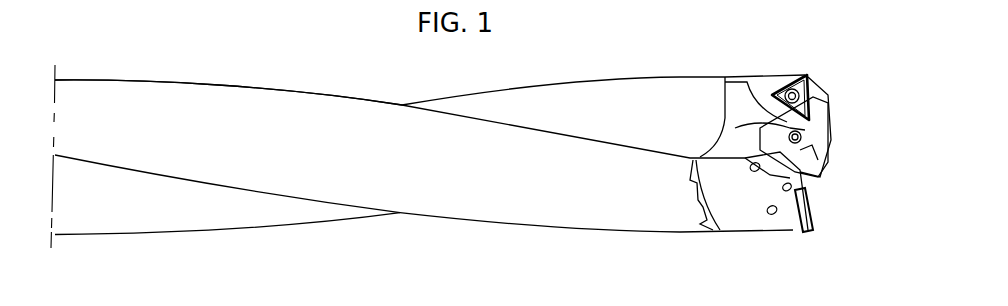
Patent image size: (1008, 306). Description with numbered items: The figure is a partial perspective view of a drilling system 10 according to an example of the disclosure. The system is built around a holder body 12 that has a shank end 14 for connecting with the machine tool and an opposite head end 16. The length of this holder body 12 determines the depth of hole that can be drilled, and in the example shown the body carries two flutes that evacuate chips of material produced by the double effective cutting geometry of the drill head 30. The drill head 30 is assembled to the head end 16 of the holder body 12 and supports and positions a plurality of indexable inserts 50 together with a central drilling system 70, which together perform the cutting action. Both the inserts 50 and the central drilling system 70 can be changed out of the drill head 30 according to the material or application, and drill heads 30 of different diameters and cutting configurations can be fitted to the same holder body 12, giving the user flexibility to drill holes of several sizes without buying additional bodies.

The drilling system 10 is at (257, 72).
The holder body 12 is at (172, 236).
The shank end 14 is at (102, 80).
The head end 16 is at (691, 77).
The drill head 30 is at (767, 70).
The indexable inserts 50 is at (808, 92).
The central drilling system 70 is at (827, 153).